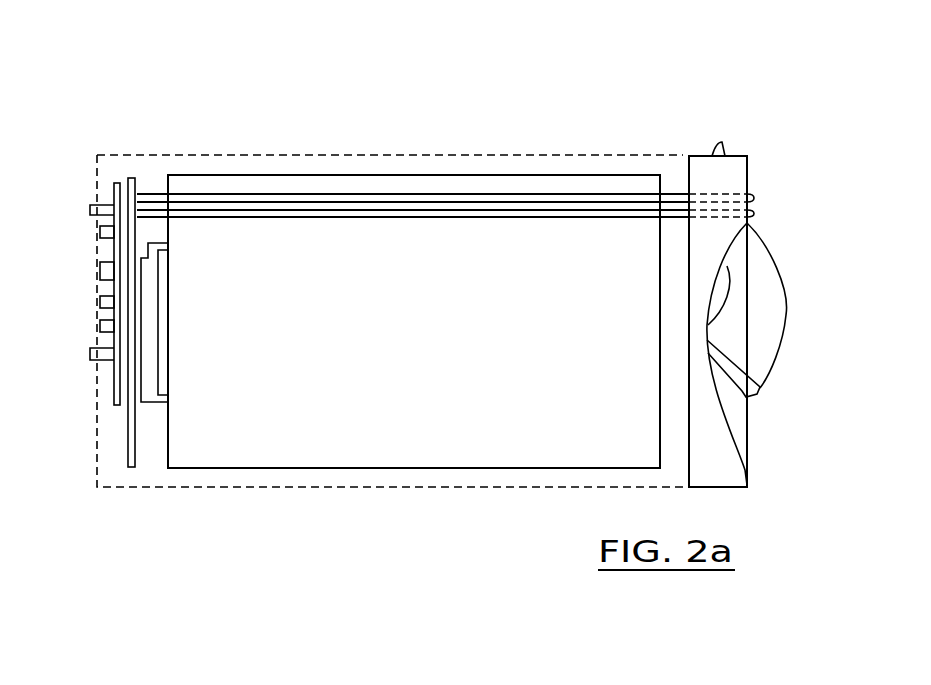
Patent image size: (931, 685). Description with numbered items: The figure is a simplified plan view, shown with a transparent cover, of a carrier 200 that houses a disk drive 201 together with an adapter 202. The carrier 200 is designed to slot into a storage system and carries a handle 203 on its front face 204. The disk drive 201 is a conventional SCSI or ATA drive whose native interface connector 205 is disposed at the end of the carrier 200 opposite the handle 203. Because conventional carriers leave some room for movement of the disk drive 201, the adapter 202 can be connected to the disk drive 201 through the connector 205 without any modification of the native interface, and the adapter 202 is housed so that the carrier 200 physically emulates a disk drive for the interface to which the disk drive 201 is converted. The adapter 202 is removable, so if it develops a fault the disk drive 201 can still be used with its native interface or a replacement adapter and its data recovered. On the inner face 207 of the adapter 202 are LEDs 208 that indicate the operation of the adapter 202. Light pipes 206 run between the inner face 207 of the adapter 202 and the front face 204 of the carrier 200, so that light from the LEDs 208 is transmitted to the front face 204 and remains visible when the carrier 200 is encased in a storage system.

The carrier 200 is at (119, 58).
The disk drive 201 is at (427, 175).
The adapter 202 is at (130, 458).
The handle 203 is at (783, 278).
The front face 204 is at (748, 178).
The connector 205 is at (148, 404).
The light pipes 206 is at (577, 212).
The inner face 207 is at (133, 185).
The LEDs 208 is at (147, 212).